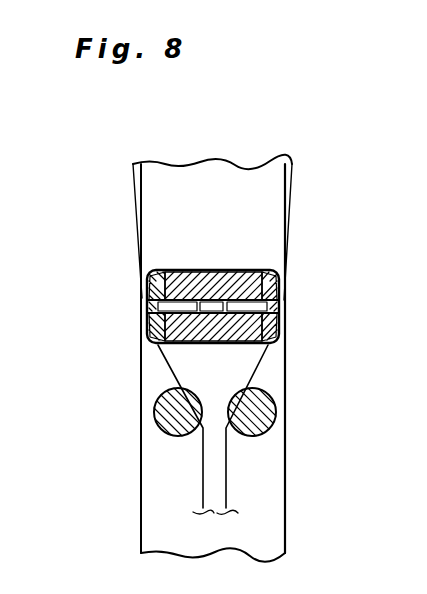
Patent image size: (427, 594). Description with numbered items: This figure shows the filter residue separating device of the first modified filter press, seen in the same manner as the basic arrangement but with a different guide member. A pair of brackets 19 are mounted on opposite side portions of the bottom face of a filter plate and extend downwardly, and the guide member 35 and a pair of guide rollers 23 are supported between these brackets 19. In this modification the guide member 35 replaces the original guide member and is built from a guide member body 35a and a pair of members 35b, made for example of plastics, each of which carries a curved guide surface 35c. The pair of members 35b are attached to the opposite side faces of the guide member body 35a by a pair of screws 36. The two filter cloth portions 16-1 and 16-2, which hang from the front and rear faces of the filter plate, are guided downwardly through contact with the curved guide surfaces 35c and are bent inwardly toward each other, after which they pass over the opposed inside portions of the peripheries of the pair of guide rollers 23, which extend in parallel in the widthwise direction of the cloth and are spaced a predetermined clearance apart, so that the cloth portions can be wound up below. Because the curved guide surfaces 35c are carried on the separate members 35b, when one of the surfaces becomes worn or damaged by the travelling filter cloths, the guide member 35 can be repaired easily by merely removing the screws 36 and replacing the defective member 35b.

The bracket 19 is at (223, 178).
The filter cloth portion 16-1 is at (130, 183).
The filter cloth portion 16-2 is at (292, 180).
The guide member 35 is at (217, 306).
The guide member body 35a is at (185, 273).
The member 35b is at (152, 290).
The curved guide surface 35c is at (160, 343).
The screw 36 is at (152, 306).
The guide roller 23 is at (178, 420).